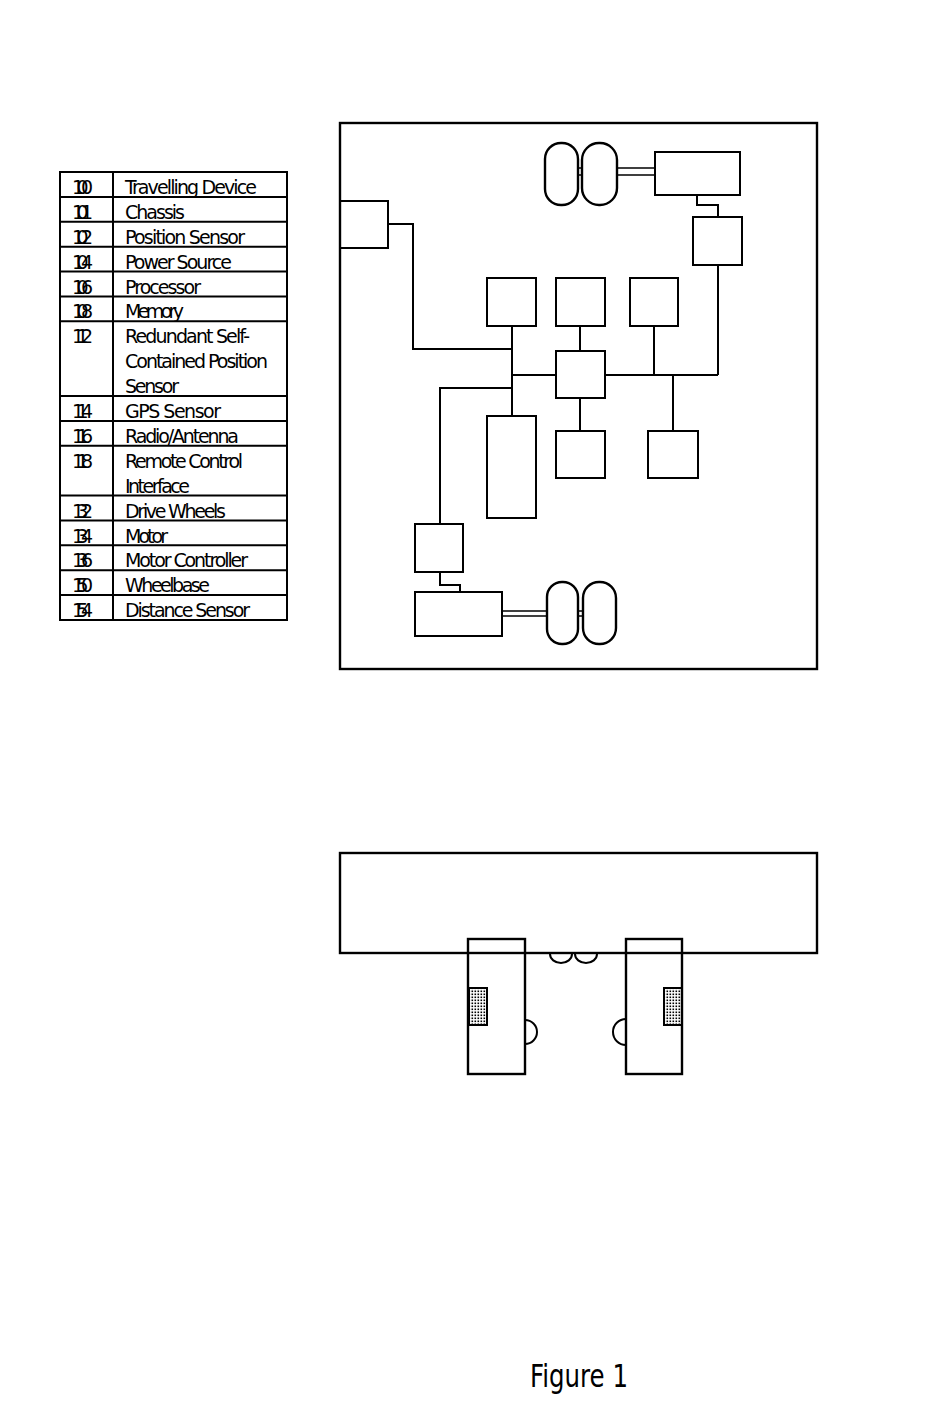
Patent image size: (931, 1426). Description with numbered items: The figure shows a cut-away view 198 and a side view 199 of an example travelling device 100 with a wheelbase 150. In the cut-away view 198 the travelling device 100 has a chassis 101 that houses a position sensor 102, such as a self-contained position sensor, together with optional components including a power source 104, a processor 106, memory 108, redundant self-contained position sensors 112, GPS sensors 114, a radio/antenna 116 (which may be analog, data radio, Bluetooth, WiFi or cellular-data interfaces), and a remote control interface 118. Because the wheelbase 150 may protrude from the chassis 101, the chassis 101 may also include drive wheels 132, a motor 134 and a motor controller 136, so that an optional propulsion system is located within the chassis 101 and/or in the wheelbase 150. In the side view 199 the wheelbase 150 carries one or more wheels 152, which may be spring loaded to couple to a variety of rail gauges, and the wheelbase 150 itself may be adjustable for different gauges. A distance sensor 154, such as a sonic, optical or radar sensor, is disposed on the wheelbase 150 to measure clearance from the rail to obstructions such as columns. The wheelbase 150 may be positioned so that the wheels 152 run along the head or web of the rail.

The travelling device 100 is at (449, 104).
The chassis 101 is at (364, 123).
The position sensor 102 is at (594, 314).
The power source 104 is at (525, 478).
The processor 106 is at (594, 386).
The memory 108 is at (525, 314).
The redundant self-contained position sensors 112 is at (594, 466).
The GPS sensors 114 is at (686, 466).
The radio/antenna 116 is at (668, 314).
The remote control interface 118 is at (378, 236).
The drive wheels 132 is at (551, 158).
The motor 134 is at (711, 186).
The motor controller 136 is at (731, 254).
The wheelbase 150 is at (448, 995).
The wheels 152 is at (622, 1020).
The distance sensor 154 is at (476, 988).
The cut-away view 198 is at (268, 63).
The side view 199 is at (278, 801).